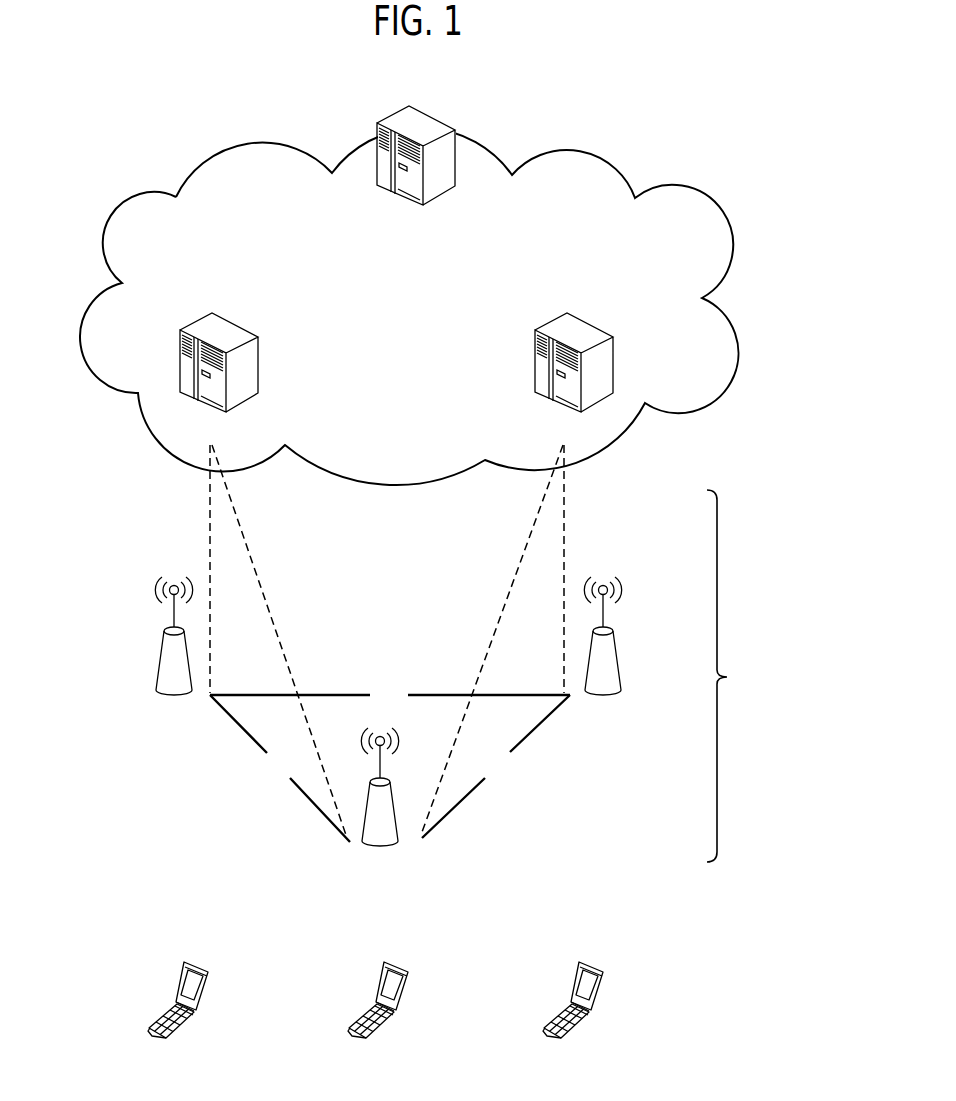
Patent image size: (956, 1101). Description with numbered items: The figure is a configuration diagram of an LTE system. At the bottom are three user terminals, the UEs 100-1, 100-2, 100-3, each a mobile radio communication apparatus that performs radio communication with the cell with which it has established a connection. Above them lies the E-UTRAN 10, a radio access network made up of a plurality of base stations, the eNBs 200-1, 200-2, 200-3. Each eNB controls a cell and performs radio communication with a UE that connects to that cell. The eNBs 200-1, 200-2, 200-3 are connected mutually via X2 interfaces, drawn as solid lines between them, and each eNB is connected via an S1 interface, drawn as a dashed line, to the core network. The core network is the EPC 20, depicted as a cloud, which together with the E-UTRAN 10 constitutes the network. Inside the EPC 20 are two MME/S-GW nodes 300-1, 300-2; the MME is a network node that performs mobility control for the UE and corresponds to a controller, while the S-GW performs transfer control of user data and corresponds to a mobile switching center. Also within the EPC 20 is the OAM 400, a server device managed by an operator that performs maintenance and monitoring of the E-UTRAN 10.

The E-UTRAN 10 is at (515, 653).
The EPC 20 is at (617, 163).
The UE 100-1 is at (197, 962).
The UE 100-2 is at (397, 962).
The UE 100-3 is at (592, 962).
The eNB 200-1 is at (160, 667).
The eNB 200-2 is at (397, 822).
The eNB 200-3 is at (616, 643).
The MME/S-GW 300-1 is at (263, 302).
The MME/S-GW 300-2 is at (602, 304).
The OAM 400 is at (430, 113).